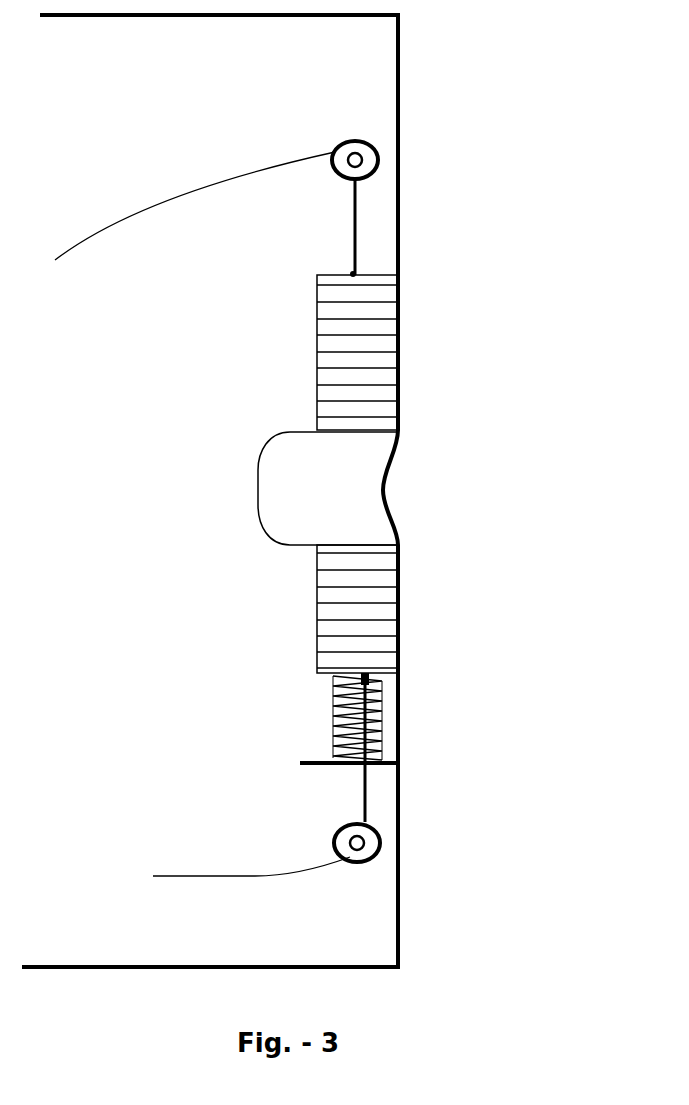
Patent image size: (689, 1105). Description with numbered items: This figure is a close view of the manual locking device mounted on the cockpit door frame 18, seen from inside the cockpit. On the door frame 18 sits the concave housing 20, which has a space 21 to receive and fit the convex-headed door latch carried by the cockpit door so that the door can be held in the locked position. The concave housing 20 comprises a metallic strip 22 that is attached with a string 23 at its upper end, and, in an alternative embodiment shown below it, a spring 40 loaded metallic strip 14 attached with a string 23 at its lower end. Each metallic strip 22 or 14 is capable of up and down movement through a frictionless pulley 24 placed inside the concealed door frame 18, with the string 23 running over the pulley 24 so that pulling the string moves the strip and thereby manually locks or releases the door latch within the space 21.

The spring loaded metallic strip 14 is at (316, 627).
The cockpit door frame 18 is at (210, 491).
The concave housing 20 is at (258, 497).
The space 21 is at (345, 489).
The metallic strip 22 is at (316, 383).
The string 23 is at (172, 192).
The frictionless pulley 24 is at (380, 164).
The spring 40 is at (330, 707).